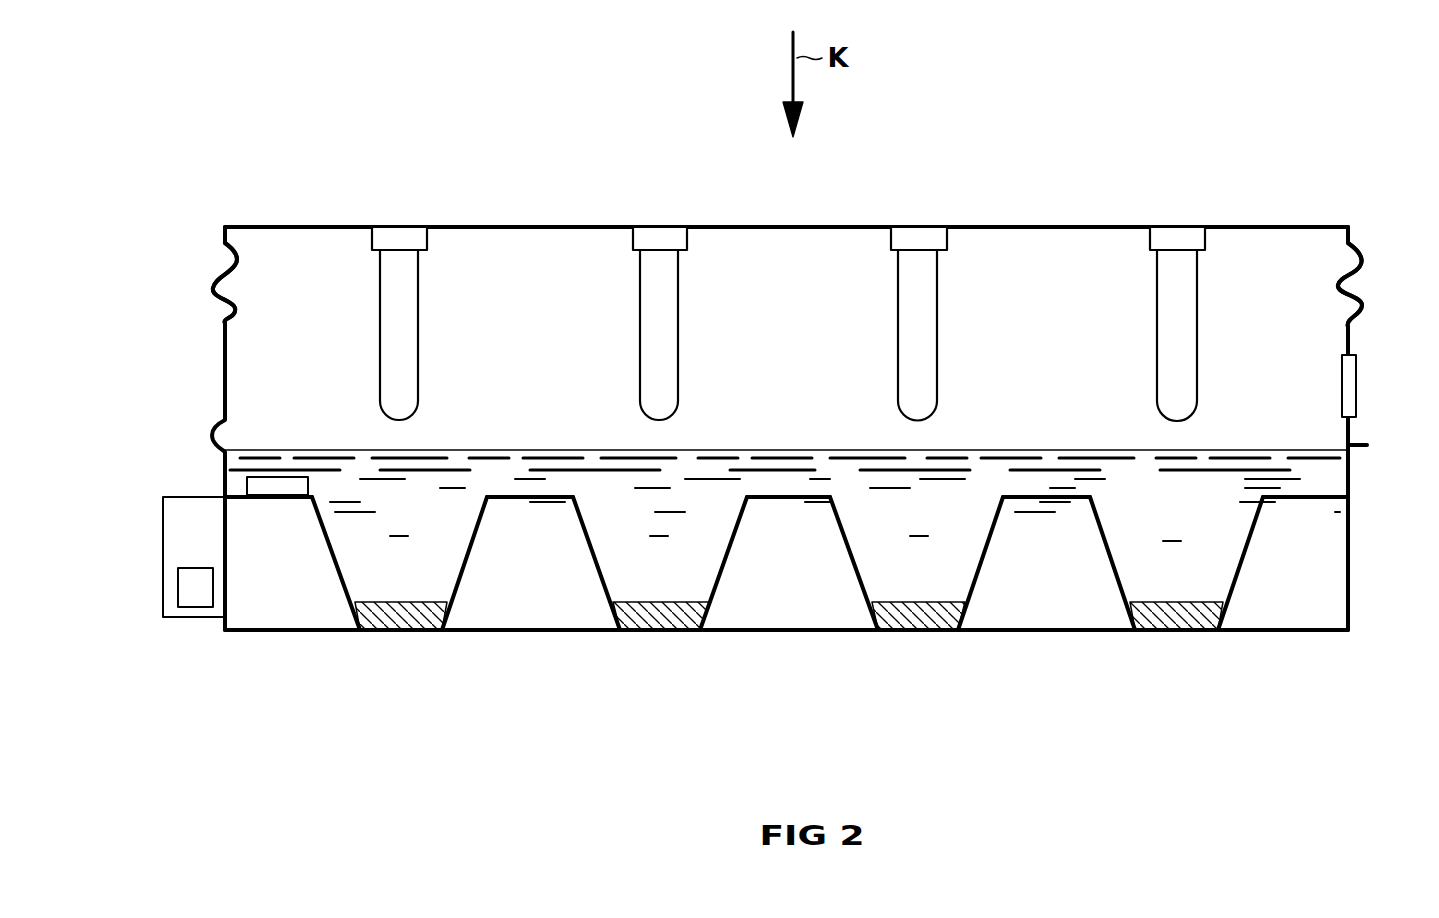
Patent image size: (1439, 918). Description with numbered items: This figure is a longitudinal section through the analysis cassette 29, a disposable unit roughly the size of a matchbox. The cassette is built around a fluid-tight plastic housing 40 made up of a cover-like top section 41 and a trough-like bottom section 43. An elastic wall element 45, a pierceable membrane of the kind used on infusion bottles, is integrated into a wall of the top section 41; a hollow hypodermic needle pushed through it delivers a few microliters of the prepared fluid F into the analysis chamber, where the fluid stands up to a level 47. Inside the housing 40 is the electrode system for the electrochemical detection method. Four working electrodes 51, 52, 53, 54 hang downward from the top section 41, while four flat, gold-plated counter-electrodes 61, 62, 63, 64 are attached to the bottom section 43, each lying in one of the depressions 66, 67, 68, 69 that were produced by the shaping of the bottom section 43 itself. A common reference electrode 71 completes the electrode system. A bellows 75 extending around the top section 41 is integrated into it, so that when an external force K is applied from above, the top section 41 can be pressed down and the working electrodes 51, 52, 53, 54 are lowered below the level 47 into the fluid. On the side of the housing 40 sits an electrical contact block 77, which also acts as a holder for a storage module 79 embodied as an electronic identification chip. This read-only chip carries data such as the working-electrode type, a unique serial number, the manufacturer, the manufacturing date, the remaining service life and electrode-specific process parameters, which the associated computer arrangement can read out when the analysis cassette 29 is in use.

The analysis cassette 29 is at (1088, 100).
The housing 40 is at (327, 227).
The top section 41 is at (1277, 227).
The bottom section 43 is at (287, 630).
The elastic wall element 45 is at (1358, 389).
The level 47 is at (978, 450).
The working electrode 51 is at (1197, 335).
The working electrode 52 is at (937, 335).
The working electrode 53 is at (678, 335).
The working electrode 54 is at (418, 335).
The counter-electrode 61 is at (1180, 617).
The counter-electrode 62 is at (918, 622).
The counter-electrode 63 is at (660, 622).
The counter-electrode 64 is at (403, 622).
The depression 66 is at (1155, 590).
The depression 67 is at (902, 590).
The depression 68 is at (642, 590).
The depression 69 is at (382, 590).
The reference electrode 71 is at (262, 488).
The bellows 75 is at (213, 297).
The electrical contact block 77 is at (177, 527).
The storage module 79 is at (190, 591).